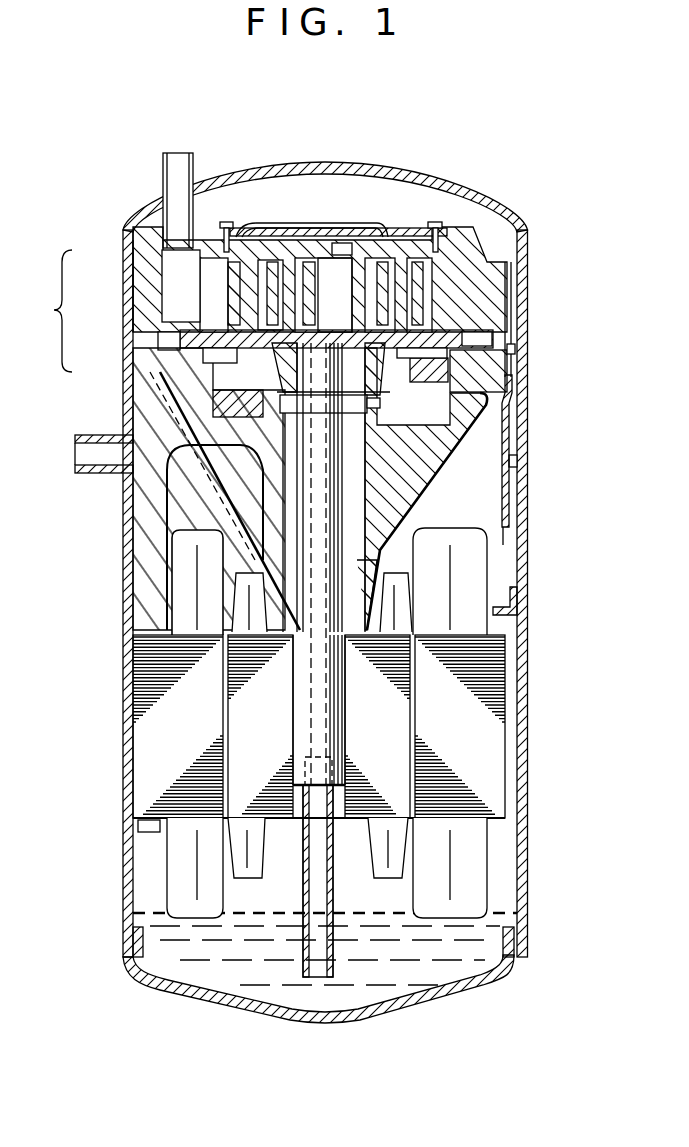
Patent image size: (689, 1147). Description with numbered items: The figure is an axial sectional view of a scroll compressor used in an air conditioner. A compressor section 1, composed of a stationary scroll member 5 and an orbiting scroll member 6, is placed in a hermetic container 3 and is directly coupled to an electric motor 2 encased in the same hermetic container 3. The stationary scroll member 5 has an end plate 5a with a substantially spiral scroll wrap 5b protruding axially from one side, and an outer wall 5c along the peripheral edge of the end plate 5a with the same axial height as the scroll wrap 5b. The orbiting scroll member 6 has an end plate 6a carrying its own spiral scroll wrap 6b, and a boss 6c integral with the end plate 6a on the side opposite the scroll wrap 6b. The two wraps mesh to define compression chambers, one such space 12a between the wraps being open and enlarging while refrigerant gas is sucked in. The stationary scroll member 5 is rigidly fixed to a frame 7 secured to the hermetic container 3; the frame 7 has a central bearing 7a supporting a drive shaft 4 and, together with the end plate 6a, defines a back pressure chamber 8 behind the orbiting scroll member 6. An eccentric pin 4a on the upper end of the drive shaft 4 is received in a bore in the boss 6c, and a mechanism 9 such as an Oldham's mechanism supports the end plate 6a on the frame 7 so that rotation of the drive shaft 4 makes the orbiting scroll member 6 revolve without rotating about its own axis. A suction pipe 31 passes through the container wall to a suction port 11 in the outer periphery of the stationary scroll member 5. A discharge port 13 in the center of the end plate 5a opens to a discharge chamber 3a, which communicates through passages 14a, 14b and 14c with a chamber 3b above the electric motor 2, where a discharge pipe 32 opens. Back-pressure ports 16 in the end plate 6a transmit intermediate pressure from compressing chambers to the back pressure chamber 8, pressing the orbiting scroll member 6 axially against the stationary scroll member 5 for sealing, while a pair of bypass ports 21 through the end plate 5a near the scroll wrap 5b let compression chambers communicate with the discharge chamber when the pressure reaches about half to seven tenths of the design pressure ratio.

The compressor section 1 is at (53, 311).
The electric motor 2 is at (476, 780).
The hermetic container 3 is at (438, 182).
The discharge chamber 3a is at (315, 183).
The chamber 3b is at (478, 506).
The drive shaft 4 is at (300, 486).
The eccentric pin 4a is at (362, 430).
The stationary scroll member 5 is at (357, 232).
The end plate 5a is at (366, 236).
The scroll wrap 5b is at (362, 283).
The outer wall 5c is at (480, 302).
The orbiting scroll member 6 is at (484, 356).
The end plate 6a is at (470, 337).
The scroll wrap 6b is at (282, 245).
The boss 6c is at (400, 390).
The frame 7 is at (458, 444).
The central bearing 7a is at (478, 532).
The back pressure chamber 8 is at (505, 450).
The mechanism 9 is at (205, 358).
The suction port 11 is at (162, 282).
The space 12a is at (210, 295).
The discharge port 13 is at (337, 243).
The passage 14a is at (512, 282).
The passage 14b is at (514, 350).
The passage 14c is at (512, 463).
The back-pressure ports 16 is at (213, 395).
The bypass ports 21 is at (265, 225).
The suction pipe 31 is at (163, 185).
The discharge pipe 32 is at (90, 474).